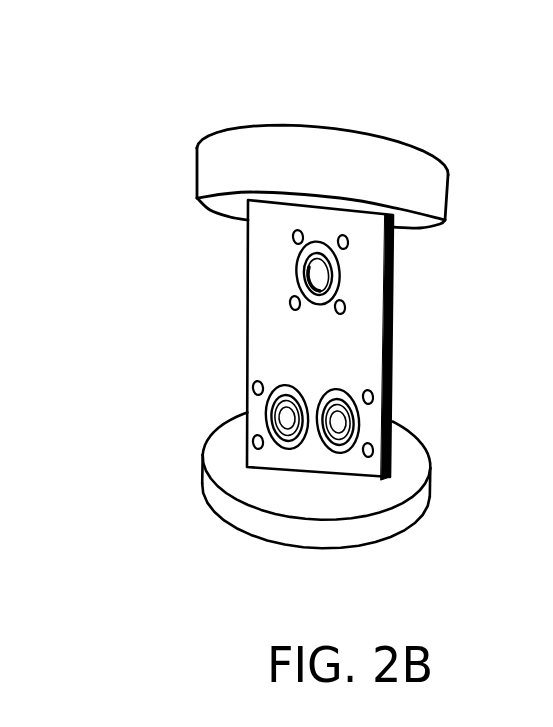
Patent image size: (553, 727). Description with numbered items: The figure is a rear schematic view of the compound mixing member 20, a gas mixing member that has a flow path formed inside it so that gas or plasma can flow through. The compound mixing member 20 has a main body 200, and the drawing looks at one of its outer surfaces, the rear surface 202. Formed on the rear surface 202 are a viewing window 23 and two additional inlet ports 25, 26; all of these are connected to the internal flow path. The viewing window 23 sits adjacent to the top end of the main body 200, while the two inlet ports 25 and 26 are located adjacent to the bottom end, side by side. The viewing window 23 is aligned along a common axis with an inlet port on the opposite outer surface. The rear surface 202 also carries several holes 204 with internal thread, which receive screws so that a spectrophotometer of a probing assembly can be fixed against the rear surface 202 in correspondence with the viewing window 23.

The compound mixing member 20 is at (187, 108).
The main body 200 is at (248, 243).
The rear surface 202 is at (372, 333).
The hole with internal thread 204 is at (303, 237).
The viewing window 23 is at (320, 278).
The inlet port 25 is at (290, 417).
The inlet port 26 is at (340, 420).